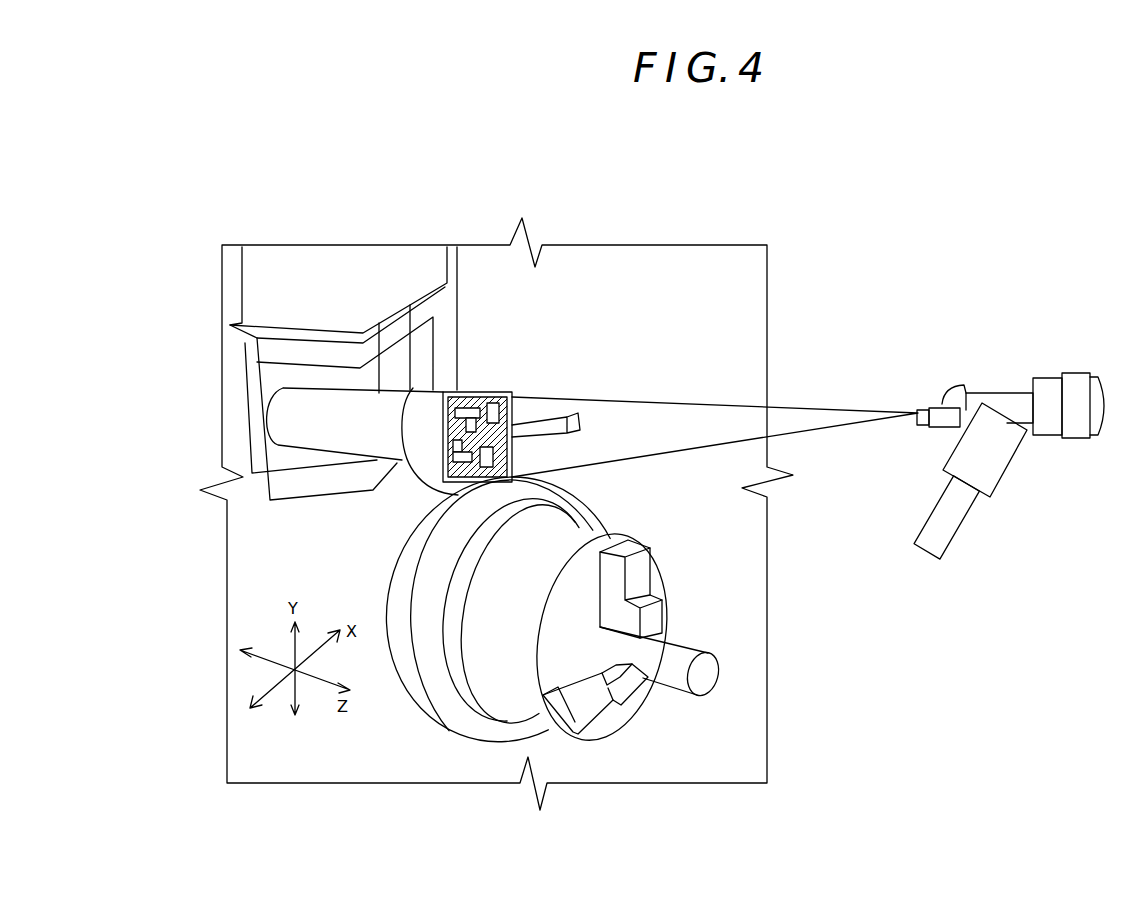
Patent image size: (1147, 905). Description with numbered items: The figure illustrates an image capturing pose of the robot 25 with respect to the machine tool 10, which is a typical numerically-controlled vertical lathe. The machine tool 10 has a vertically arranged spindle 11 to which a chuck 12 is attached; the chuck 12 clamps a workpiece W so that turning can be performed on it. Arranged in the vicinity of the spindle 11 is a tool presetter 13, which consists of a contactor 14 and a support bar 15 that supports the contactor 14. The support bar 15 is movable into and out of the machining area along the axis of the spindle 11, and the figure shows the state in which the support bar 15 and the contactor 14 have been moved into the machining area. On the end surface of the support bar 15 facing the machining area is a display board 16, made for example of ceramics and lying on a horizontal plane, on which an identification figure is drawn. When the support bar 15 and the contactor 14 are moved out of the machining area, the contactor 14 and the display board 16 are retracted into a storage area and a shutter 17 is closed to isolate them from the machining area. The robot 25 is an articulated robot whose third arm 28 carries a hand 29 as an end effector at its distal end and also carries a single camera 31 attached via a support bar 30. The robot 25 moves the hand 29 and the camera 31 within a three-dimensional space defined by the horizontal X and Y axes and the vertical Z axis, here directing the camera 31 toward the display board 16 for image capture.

The machine tool 10 is at (766, 317).
The spindle 11 is at (471, 690).
The chuck 12 is at (665, 577).
The tool presetter 13 is at (453, 348).
The contactor 14 is at (549, 417).
The support bar 15 is at (377, 350).
The display board 16 is at (486, 390).
The shutter 17 is at (303, 353).
The robot 25 is at (827, 423).
The third arm 28 is at (1000, 395).
The hand 29 is at (1000, 477).
The support bar 30 is at (961, 385).
The camera 31 is at (922, 428).
The workpiece W is at (716, 672).